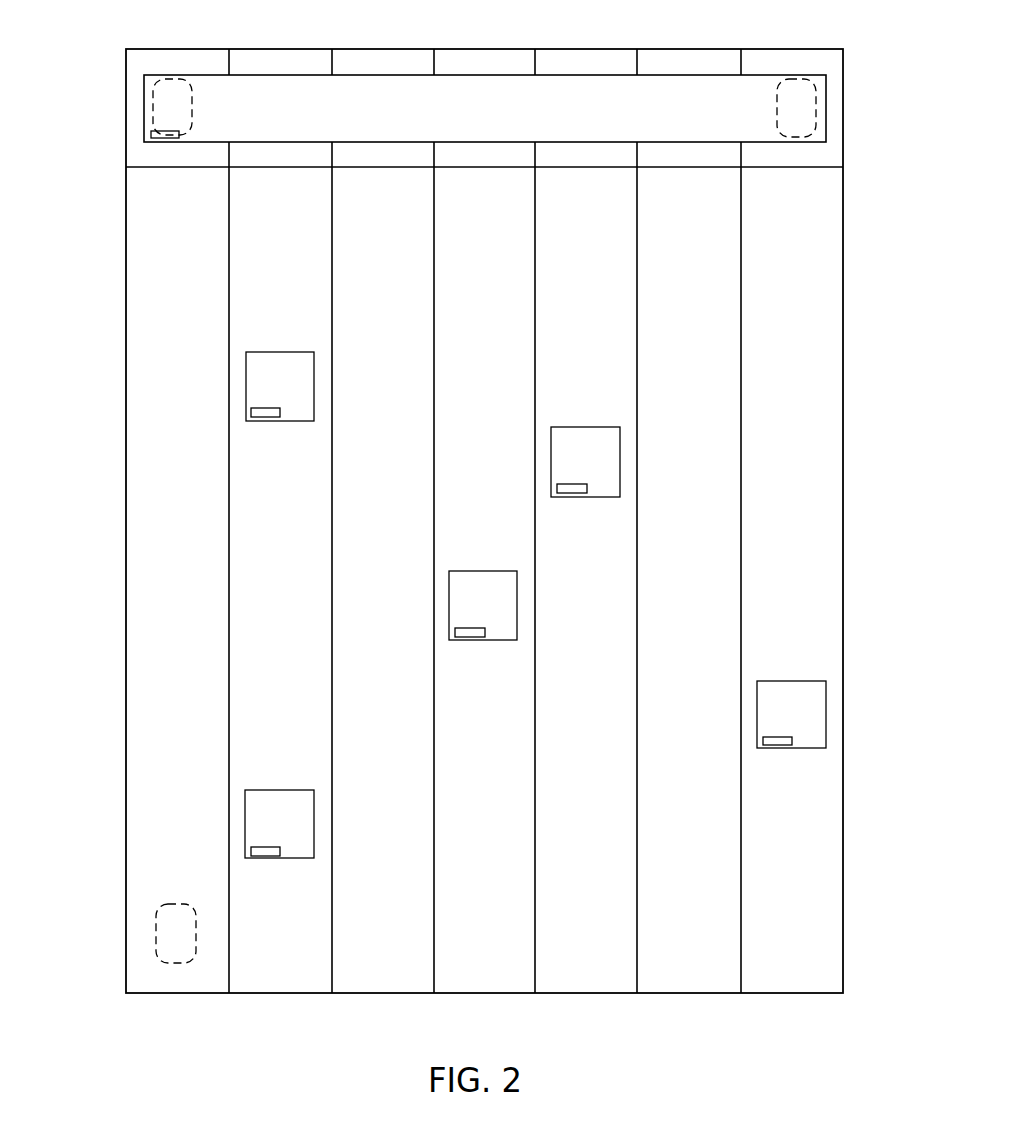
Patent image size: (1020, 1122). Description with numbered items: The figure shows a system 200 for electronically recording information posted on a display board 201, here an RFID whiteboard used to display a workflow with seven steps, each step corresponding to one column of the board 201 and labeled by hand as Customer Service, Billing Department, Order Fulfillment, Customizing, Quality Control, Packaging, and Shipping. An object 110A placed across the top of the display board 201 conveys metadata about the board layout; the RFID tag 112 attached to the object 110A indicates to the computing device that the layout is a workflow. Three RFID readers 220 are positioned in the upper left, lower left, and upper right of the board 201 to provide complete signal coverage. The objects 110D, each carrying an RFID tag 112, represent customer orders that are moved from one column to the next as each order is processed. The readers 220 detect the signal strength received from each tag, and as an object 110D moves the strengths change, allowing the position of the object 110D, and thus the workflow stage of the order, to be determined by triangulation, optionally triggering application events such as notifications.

The system 200 is at (177, 18).
The display board 201 is at (126, 55).
The object 110A is at (152, 97).
The objects 110D is at (246, 358).
The RFID tag 112 is at (151, 134).
The RFID readers 220 is at (192, 96).